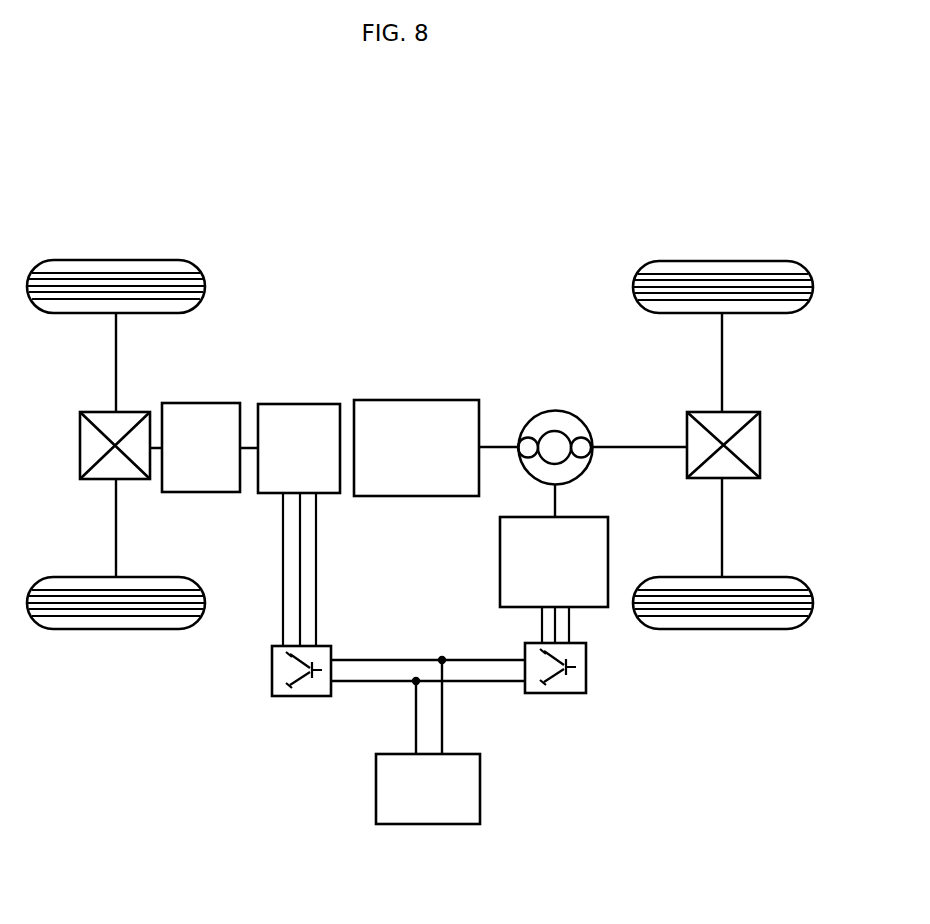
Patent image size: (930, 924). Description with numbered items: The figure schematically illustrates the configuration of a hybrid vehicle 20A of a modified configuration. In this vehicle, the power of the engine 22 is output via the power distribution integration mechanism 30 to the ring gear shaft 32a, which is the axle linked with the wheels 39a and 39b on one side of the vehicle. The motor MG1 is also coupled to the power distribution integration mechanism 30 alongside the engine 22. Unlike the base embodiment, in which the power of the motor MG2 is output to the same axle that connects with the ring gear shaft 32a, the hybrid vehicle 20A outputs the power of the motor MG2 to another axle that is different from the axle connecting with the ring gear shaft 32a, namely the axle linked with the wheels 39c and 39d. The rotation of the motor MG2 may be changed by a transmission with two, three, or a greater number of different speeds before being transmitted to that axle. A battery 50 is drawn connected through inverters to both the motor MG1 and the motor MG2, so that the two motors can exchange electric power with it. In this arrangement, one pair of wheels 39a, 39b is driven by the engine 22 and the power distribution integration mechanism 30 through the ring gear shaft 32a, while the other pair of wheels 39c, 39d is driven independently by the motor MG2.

The hybrid vehicle 20A is at (455, 207).
The engine 22 is at (422, 400).
The power distribution integration mechanism 30 is at (555, 410).
The ring gear shaft 32a is at (612, 445).
The wheel 39a is at (727, 261).
The wheel 39b is at (725, 630).
The wheel 39c is at (119, 260).
The wheel 39d is at (117, 630).
The battery 50 is at (480, 787).
The motor MG1 is at (500, 563).
The motor MG2 is at (300, 402).